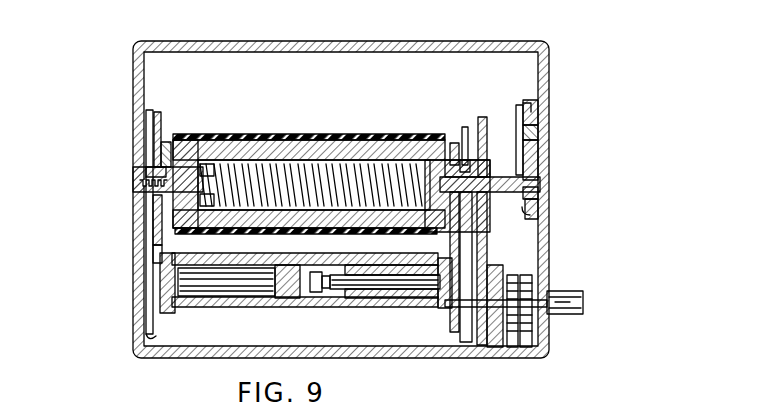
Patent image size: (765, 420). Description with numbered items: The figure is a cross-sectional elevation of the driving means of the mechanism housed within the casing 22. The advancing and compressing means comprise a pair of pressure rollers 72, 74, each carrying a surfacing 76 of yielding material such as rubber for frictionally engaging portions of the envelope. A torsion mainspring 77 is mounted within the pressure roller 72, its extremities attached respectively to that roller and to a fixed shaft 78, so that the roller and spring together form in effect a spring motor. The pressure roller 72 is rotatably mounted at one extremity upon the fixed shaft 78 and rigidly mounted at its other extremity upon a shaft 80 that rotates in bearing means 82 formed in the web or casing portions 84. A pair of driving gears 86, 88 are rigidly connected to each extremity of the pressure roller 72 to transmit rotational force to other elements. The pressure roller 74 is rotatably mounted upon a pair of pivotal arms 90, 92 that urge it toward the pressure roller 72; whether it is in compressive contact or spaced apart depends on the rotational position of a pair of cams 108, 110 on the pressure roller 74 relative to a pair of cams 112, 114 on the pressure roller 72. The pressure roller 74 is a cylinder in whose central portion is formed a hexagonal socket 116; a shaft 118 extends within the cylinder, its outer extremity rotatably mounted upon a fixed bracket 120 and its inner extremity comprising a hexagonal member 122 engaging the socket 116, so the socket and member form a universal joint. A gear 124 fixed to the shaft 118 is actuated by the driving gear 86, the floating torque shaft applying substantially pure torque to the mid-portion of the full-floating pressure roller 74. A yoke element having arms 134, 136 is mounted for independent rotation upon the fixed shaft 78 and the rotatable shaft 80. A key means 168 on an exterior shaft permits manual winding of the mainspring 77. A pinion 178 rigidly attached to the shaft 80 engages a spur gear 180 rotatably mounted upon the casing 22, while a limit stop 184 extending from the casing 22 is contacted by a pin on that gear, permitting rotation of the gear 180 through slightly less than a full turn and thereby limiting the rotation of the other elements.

The casing 22 is at (549, 52).
The pressure roller 72 is at (284, 136).
The pressure roller 74 is at (197, 293).
The surfacing 76 is at (305, 136).
The torsion mainspring 77 is at (348, 160).
The fixed shaft 78 is at (193, 145).
The shaft 80 is at (512, 180).
The bearing means 82 is at (540, 190).
The web or casing portions 84 is at (540, 152).
The driving gear 86 is at (482, 115).
The driving gear 88 is at (157, 125).
The pivotal arm 90 is at (458, 336).
The pivotal arm 92 is at (149, 330).
The cam 108 is at (448, 306).
The cam 110 is at (160, 258).
The cam 112 is at (453, 143).
The cam 114 is at (170, 142).
The hexagonal socket 116 is at (310, 290).
The shaft 118 is at (400, 280).
The fixed bracket 120 is at (525, 332).
The hexagonal member 122 is at (328, 292).
The gear 124 is at (490, 330).
The yoke arm 134 is at (464, 127).
The yoke arm 136 is at (146, 112).
The key means 168 is at (583, 303).
The pinion 178 is at (540, 212).
The spur gear 180 is at (540, 125).
The limit stop 184 is at (540, 100).